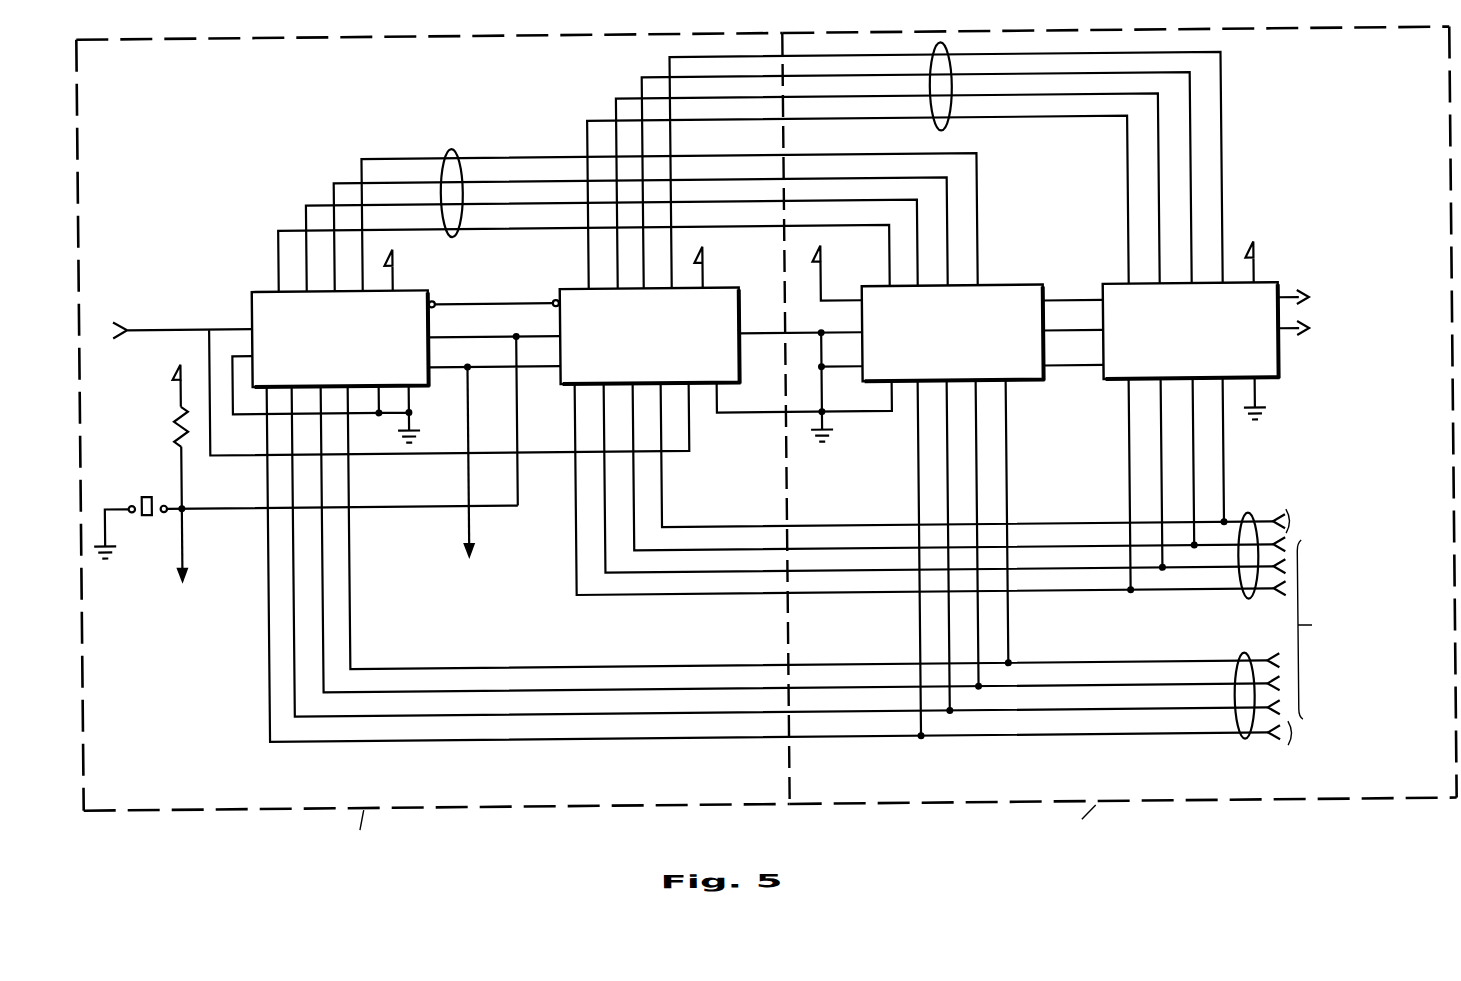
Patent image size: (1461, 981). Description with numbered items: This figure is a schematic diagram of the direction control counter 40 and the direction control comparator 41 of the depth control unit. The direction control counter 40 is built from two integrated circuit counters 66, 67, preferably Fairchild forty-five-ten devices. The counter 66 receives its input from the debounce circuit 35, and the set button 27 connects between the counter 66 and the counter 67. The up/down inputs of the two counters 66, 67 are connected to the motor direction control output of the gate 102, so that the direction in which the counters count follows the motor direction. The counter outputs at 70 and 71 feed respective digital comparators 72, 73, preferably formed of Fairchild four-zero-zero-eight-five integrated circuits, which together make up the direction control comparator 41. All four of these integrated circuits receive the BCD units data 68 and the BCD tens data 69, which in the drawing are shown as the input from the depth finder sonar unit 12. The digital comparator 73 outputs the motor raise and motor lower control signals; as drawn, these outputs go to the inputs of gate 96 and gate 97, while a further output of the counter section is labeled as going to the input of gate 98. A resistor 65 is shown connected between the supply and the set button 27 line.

The depth finder sonar unit 12 is at (1359, 626).
The set button 27 is at (133, 498).
The debounce circuit 35 is at (400, 348).
The direction control counter 40 is at (597, 807).
The direction control comparator 41 is at (868, 807).
The resistor 65 is at (175, 427).
The counter 66 is at (396, 375).
The counter 67 is at (725, 338).
The BCD units data 68 is at (1246, 744).
The BCD tens data 69 is at (1247, 602).
The counter output 70 is at (455, 152).
The counter output 71 is at (947, 132).
The digital comparator 72 is at (957, 307).
The digital comparator 73 is at (1196, 327).
The gate 96 input (motor raise) 96 is at (1287, 297).
The gate 97 input (motor lower) 97 is at (1340, 376).
The gate 98 input 98 is at (187, 582).
The gate 102 is at (470, 510).